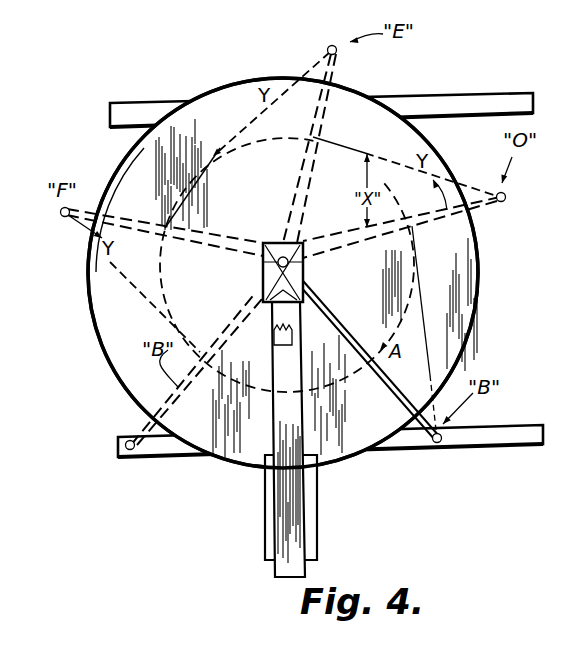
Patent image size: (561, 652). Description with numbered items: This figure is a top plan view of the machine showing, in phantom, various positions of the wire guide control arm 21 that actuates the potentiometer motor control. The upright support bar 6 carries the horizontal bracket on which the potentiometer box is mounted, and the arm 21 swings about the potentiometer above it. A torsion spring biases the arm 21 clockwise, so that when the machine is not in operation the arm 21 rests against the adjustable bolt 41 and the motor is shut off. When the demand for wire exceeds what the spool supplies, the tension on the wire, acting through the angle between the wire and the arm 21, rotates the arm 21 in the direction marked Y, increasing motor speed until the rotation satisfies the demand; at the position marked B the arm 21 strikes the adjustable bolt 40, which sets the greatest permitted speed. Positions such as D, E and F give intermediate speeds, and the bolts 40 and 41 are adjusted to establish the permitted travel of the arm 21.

The upright support bar 6 is at (118, 440).
The arm 21 is at (424, 224).
The adjustable bolt 40 is at (268, 288).
The adjustable bolt 41 is at (298, 290).